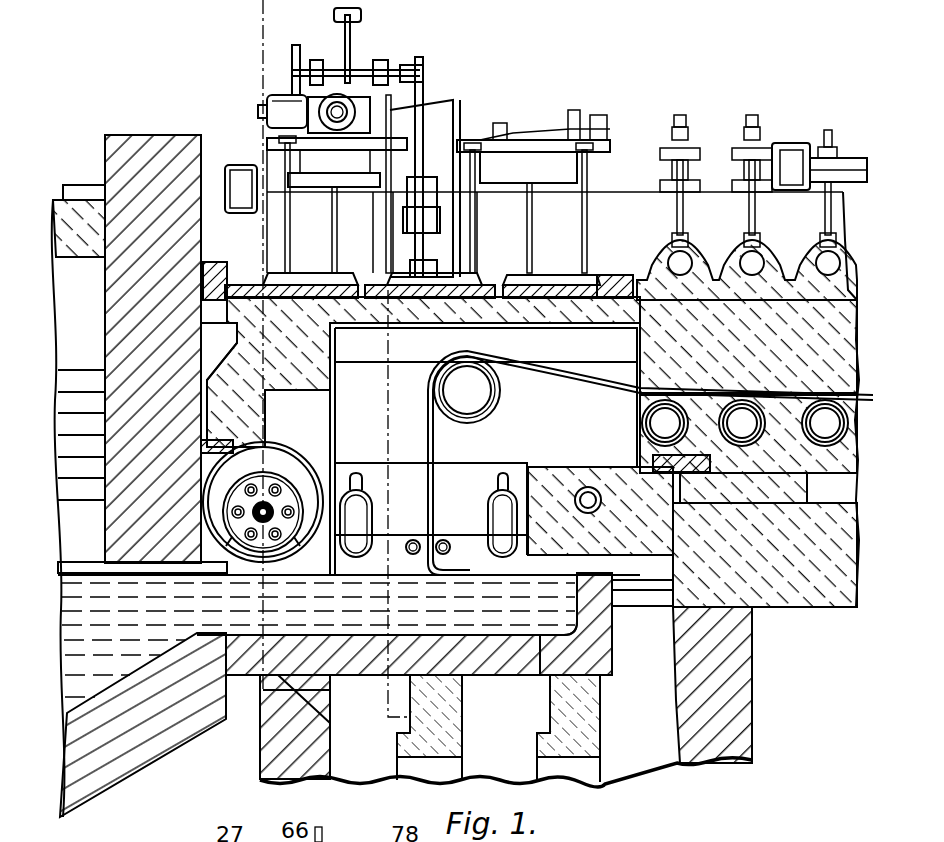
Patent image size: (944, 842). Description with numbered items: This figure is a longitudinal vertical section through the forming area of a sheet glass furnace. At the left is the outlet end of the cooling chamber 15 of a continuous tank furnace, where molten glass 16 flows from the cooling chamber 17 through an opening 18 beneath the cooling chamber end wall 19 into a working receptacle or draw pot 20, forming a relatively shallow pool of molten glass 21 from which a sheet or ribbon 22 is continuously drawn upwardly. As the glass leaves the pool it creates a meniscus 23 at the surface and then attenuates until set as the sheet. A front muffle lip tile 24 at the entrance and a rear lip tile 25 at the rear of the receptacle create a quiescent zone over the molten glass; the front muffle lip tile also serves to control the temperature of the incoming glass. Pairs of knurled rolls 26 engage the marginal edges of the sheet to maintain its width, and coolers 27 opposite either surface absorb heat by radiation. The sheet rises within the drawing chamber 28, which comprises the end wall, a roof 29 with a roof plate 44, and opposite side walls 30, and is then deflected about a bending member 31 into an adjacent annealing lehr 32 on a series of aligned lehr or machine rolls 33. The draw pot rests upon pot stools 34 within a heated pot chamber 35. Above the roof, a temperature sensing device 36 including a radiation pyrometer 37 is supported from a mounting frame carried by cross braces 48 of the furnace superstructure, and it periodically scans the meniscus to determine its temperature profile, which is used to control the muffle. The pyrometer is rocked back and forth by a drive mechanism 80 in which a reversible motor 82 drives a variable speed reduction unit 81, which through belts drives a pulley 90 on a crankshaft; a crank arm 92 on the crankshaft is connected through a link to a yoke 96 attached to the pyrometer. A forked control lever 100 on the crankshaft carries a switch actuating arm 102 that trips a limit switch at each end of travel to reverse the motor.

The outlet end of the cooling chamber 15 is at (102, 160).
The molten glass 16 is at (82, 648).
The cooling chamber 17 is at (87, 300).
The opening 18 is at (100, 557).
The cooling chamber end wall 19 is at (192, 388).
The working receptacle or draw pot 20 is at (620, 683).
The pool of molten glass 21 is at (527, 630).
The sheet or ribbon 22 is at (433, 452).
The meniscus 23 is at (437, 571).
The front muffle lip tile 24 is at (243, 442).
The rear lip tile 25 is at (583, 467).
The knurled rolls 26 is at (413, 538).
The coolers 27 is at (370, 495).
The drawing chamber 28 is at (400, 353).
The roof 29 is at (600, 273).
The side walls 30 is at (354, 432).
The bending member 31 is at (503, 410).
The annealing lehr 32 is at (820, 327).
The lehr or machine rolls 33 is at (805, 443).
The pot stools 34 is at (465, 721).
The pot chamber 35 is at (658, 757).
The temperature sensing device 36 is at (427, 90).
The radiation pyrometer 37 is at (427, 197).
The roof plate 44 is at (486, 347).
The cross braces 48 is at (277, 157).
The drive mechanism 80 is at (280, 114).
The variable speed reduction unit 81 is at (342, 123).
The reversible motor 82 is at (268, 110).
The pulley 90 is at (292, 55).
The crank arm 92 is at (415, 197).
The yoke 96 is at (440, 220).
The forked control lever 100 is at (338, 42).
The switch actuating arm 102 is at (355, 34).